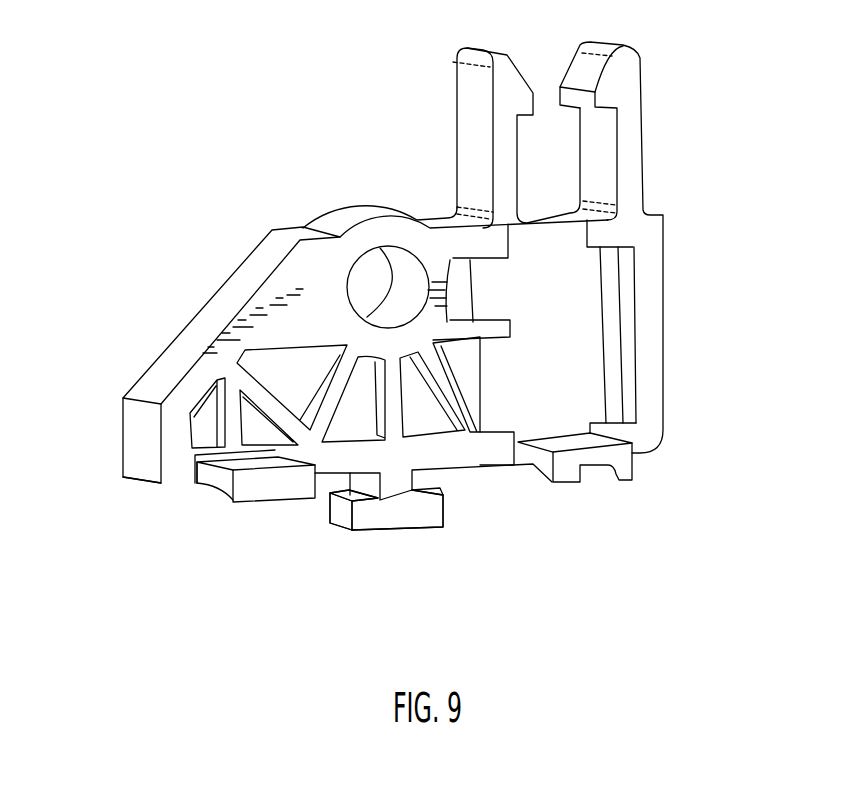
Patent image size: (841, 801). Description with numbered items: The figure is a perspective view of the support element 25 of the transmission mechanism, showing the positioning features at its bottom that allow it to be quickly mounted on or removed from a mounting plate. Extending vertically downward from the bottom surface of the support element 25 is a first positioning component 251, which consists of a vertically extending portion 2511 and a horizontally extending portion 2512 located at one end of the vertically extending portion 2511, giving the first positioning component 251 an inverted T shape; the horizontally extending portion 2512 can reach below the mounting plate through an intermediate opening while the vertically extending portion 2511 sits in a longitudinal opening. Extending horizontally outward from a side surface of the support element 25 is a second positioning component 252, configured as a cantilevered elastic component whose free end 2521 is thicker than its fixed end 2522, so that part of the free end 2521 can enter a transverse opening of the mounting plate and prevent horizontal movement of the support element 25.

The support element 25 is at (304, 170).
The first positioning component 251 is at (388, 556).
The vertically extending portion 2511 is at (393, 485).
The horizontally extending portion 2512 is at (338, 517).
The second positioning component 252 is at (208, 503).
The free end 2521 is at (233, 500).
The fixed end 2522 is at (195, 483).